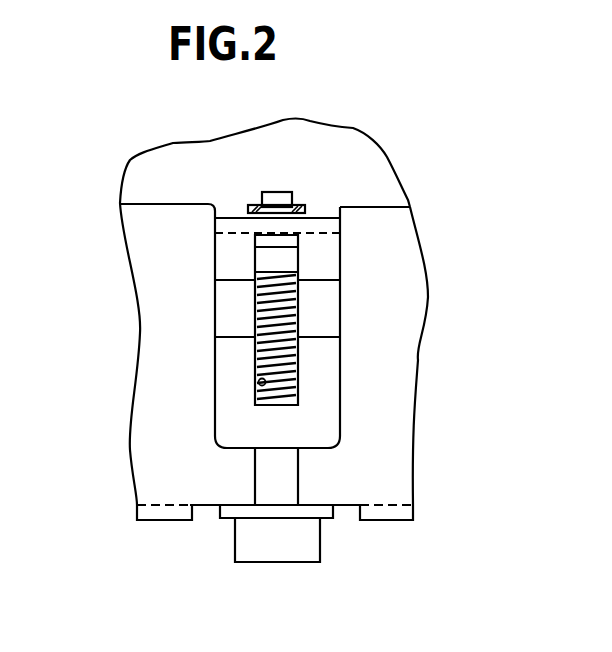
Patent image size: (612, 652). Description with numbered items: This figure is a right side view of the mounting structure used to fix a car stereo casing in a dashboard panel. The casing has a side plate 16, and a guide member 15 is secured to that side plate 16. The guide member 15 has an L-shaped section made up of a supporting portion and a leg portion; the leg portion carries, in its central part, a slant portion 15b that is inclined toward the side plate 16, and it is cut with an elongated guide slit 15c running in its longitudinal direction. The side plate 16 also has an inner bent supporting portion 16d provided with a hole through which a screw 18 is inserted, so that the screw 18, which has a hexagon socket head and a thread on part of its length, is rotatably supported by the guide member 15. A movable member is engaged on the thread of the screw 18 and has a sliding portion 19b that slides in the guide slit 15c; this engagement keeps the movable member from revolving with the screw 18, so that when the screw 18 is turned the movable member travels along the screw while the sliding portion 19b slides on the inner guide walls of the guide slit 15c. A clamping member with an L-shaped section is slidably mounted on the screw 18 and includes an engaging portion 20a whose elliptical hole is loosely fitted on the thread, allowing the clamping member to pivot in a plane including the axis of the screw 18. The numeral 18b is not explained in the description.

The guide member 15 is at (349, 308).
The slant portion 15b is at (318, 317).
The guide slit 15c is at (258, 380).
The side plate 16 is at (390, 477).
The supporting portion 16d is at (228, 510).
The screw 18 is at (255, 318).
The knob 18b is at (268, 547).
The sliding portion 19b is at (300, 258).
The engaging portion 20a is at (289, 241).